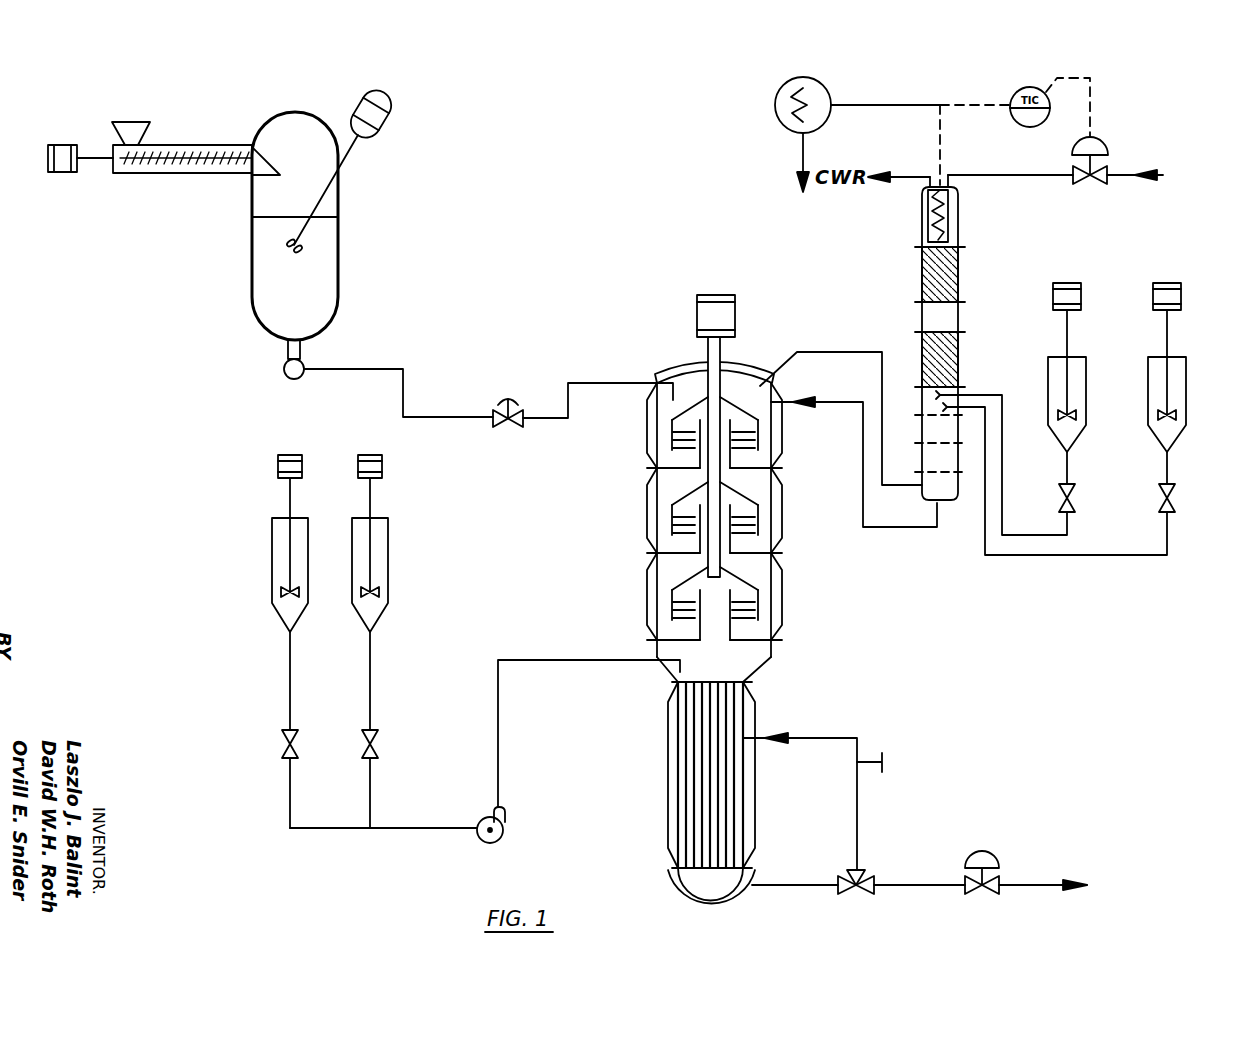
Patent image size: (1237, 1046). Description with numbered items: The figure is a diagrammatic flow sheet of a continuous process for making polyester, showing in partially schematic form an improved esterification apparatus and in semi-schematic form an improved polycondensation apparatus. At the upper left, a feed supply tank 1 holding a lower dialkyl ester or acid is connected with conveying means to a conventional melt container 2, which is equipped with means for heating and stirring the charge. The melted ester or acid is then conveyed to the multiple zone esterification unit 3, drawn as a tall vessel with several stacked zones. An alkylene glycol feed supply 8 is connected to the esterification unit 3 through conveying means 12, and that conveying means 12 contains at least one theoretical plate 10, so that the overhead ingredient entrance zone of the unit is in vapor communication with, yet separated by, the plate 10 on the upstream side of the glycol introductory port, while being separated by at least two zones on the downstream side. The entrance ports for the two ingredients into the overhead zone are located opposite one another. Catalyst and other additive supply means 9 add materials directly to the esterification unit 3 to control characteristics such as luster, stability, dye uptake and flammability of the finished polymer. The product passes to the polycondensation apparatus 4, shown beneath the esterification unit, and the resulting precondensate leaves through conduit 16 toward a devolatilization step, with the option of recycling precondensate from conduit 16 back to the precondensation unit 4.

The feed supply tank 1 is at (188, 142).
The melt container 2 is at (337, 260).
The multiple zone esterification unit 3 is at (648, 513).
The polycondensation apparatus 4 is at (668, 772).
The alkylene glycol feed supply 8 is at (1078, 383).
The catalyst and additive supply means 9 is at (1180, 383).
The plate 10 is at (925, 432).
The conveying means 12 is at (810, 393).
The conduit 16 is at (888, 882).